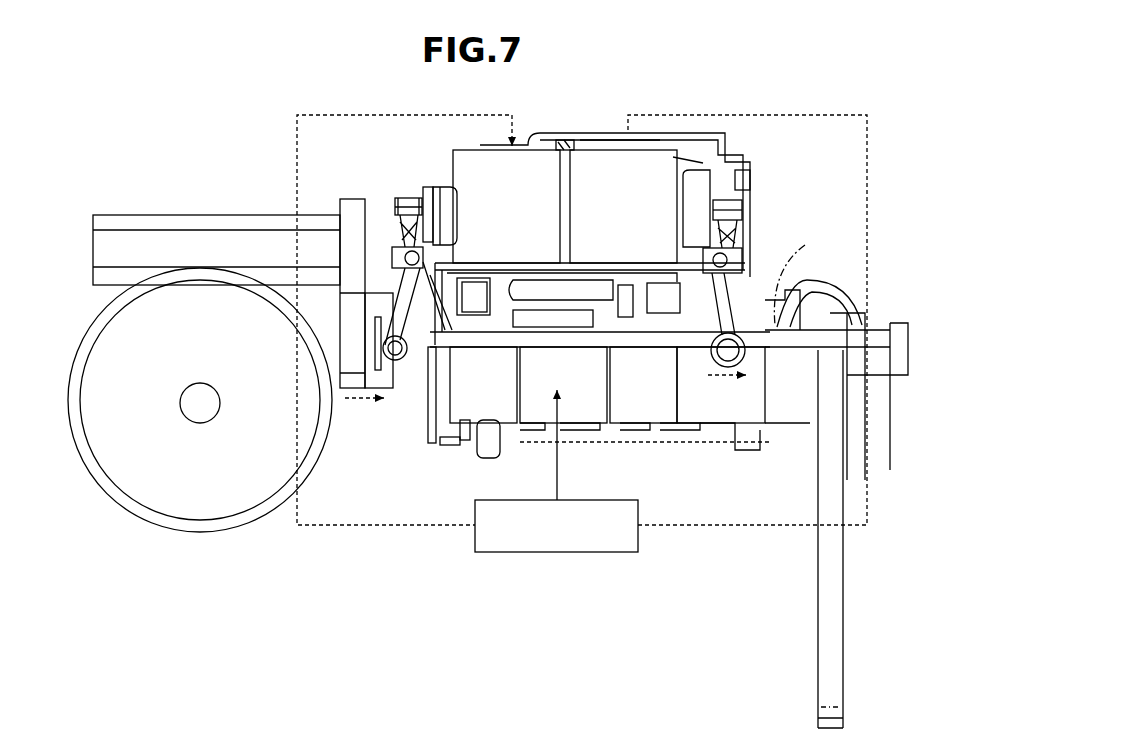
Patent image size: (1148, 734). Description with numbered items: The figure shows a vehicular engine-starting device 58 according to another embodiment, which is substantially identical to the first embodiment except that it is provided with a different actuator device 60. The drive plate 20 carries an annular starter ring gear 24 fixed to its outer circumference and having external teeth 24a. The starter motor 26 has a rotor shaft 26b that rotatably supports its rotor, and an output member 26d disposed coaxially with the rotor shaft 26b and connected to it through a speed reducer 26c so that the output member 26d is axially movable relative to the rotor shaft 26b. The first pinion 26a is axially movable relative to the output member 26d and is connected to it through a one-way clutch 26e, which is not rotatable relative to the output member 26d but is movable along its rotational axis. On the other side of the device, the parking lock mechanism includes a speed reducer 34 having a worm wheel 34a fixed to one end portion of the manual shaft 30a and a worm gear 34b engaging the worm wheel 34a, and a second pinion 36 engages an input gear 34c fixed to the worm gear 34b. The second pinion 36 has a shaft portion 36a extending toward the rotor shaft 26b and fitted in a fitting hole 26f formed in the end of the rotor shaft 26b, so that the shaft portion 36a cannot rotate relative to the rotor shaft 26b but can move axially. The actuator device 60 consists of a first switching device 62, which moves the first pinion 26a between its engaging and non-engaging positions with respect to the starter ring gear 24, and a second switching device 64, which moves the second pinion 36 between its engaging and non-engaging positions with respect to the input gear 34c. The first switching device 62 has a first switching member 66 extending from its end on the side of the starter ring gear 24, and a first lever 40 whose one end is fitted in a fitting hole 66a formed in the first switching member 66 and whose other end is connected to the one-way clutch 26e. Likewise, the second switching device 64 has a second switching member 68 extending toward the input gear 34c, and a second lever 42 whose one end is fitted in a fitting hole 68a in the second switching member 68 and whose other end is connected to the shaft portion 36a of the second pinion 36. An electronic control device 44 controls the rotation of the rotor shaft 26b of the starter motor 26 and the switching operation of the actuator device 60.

The drive plate 20 is at (812, 658).
The starter ring gear 24 is at (827, 477).
The external teeth 24a is at (837, 727).
The starter motor 26 is at (468, 434).
The first pinion 26a is at (840, 300).
The rotor shaft 26b is at (528, 340).
The speed reducer 26c is at (648, 282).
The output member 26d is at (790, 290).
The one-way clutch 26e is at (766, 285).
The fitting hole 26f is at (468, 313).
The manual shaft 30a is at (200, 413).
The speed reducer 34 is at (177, 213).
The worm wheel 34a is at (212, 508).
The worm gear 34b is at (217, 243).
The input gear 34c is at (352, 215).
The second pinion 36 is at (348, 333).
The shaft portion 36a is at (424, 357).
The first lever 40 is at (703, 218).
The second lever 42 is at (428, 212).
The electronic control device 44 is at (538, 552).
The engine-starting device 58 is at (745, 145).
The actuator device 60 is at (595, 125).
The first switching device 62 is at (577, 162).
The second switching device 64 is at (520, 157).
The first switching member 66 is at (742, 189).
The fitting hole 66a is at (743, 208).
The second switching member 68 is at (397, 205).
The fitting hole 68a is at (404, 199).